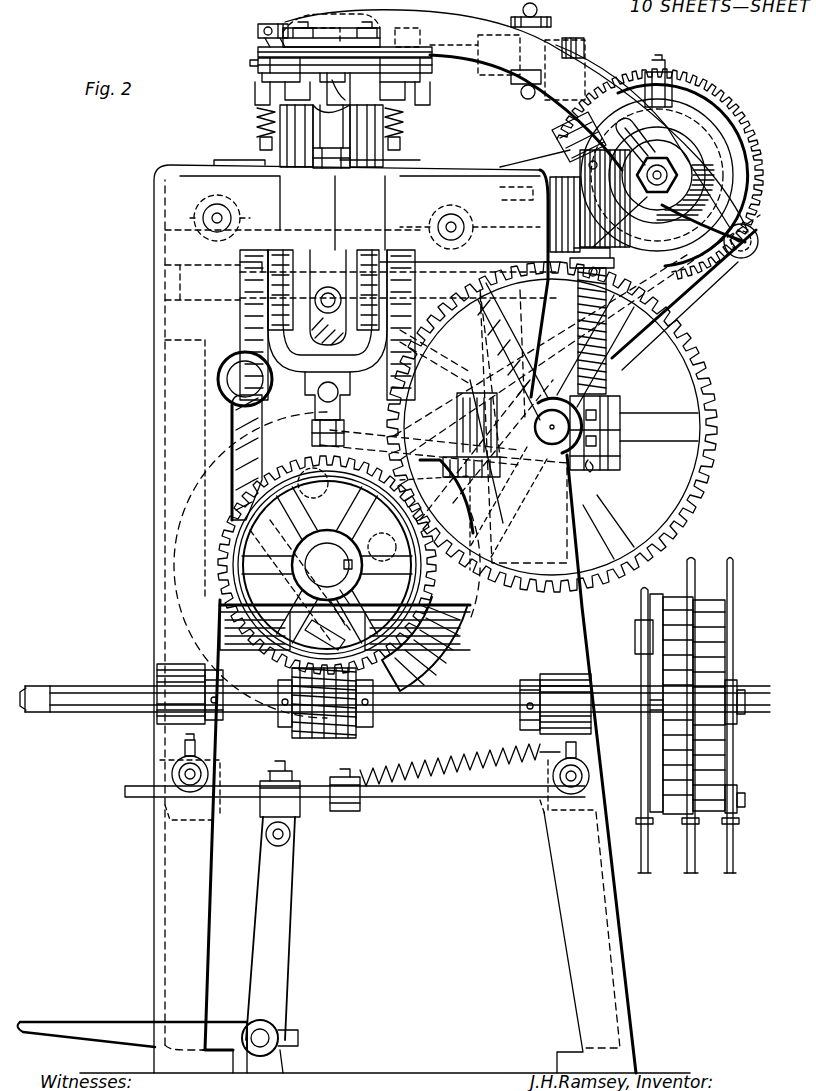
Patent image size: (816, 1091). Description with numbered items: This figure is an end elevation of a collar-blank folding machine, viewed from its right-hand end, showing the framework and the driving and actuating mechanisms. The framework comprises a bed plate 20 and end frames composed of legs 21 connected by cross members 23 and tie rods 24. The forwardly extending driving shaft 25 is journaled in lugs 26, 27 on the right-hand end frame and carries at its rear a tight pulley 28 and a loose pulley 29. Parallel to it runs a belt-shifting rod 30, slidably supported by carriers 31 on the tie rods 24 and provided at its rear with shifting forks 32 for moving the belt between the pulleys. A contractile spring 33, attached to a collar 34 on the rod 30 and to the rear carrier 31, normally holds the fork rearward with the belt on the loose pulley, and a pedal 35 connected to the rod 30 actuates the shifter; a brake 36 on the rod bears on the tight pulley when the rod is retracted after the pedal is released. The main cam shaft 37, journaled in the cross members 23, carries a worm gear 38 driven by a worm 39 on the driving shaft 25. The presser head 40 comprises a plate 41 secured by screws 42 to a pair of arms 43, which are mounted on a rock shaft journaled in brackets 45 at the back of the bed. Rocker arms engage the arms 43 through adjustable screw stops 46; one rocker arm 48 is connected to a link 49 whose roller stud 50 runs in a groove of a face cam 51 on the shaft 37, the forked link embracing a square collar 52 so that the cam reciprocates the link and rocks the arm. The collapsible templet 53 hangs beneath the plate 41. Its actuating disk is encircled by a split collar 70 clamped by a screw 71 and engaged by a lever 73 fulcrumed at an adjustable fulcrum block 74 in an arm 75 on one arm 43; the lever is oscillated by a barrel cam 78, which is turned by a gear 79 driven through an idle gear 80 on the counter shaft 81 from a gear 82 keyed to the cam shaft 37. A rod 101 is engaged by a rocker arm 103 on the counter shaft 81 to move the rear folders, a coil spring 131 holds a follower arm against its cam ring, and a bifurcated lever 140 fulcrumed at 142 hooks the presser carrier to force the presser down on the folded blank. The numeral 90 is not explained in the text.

The bed plate 20 is at (167, 168).
The legs 21 is at (156, 894).
The cross members 23 is at (476, 605).
The tie rods 24 is at (180, 773).
The driving shaft 25 is at (427, 712).
The lug 26 is at (176, 690).
The lug 27 is at (578, 702).
The tight pulley 28 is at (682, 605).
The loose pulley 29 is at (710, 600).
The belt-shifting rod 30 is at (441, 800).
The carriers 31 is at (162, 822).
The shifting forks 32 is at (695, 558).
The contractile spring 33 is at (406, 785).
The collar 34 is at (330, 812).
The pedal 35 is at (228, 1022).
The brake 36 is at (641, 604).
The main cam shaft 37 is at (327, 565).
The worm gear 38 is at (228, 604).
The worm 39 is at (344, 735).
The presser head 40 is at (258, 70).
The plate 41 is at (258, 60).
The screws 42 is at (365, 46).
The arms 43 is at (450, 24).
The brackets 45 is at (648, 206).
The adjustable screw stops 46 is at (574, 128).
The rocker arm 48 is at (750, 226).
The link 49 is at (700, 298).
The stud 50 is at (458, 505).
The face cam 51 is at (432, 681).
The square collar 52 is at (190, 522).
The templet 53 is at (318, 163).
The split collar 70 is at (265, 29).
The screw 71 is at (262, 40).
The lever 73 is at (612, 68).
The fulcrum block 74 is at (550, 22).
The arm 75 is at (584, 48).
The barrel cam 78 is at (700, 110).
The gear 79 is at (742, 124).
The idle gear 80 is at (718, 407).
The counter shaft 81 is at (562, 480).
The gear 82 is at (472, 572).
The pivot boss 90 is at (245, 379).
The rod 101 is at (466, 226).
The rocker arm 103 is at (410, 428).
The coil spring 131 is at (606, 386).
The bifurcated lever 140 is at (292, 345).
The fulcrum 142 is at (240, 287).